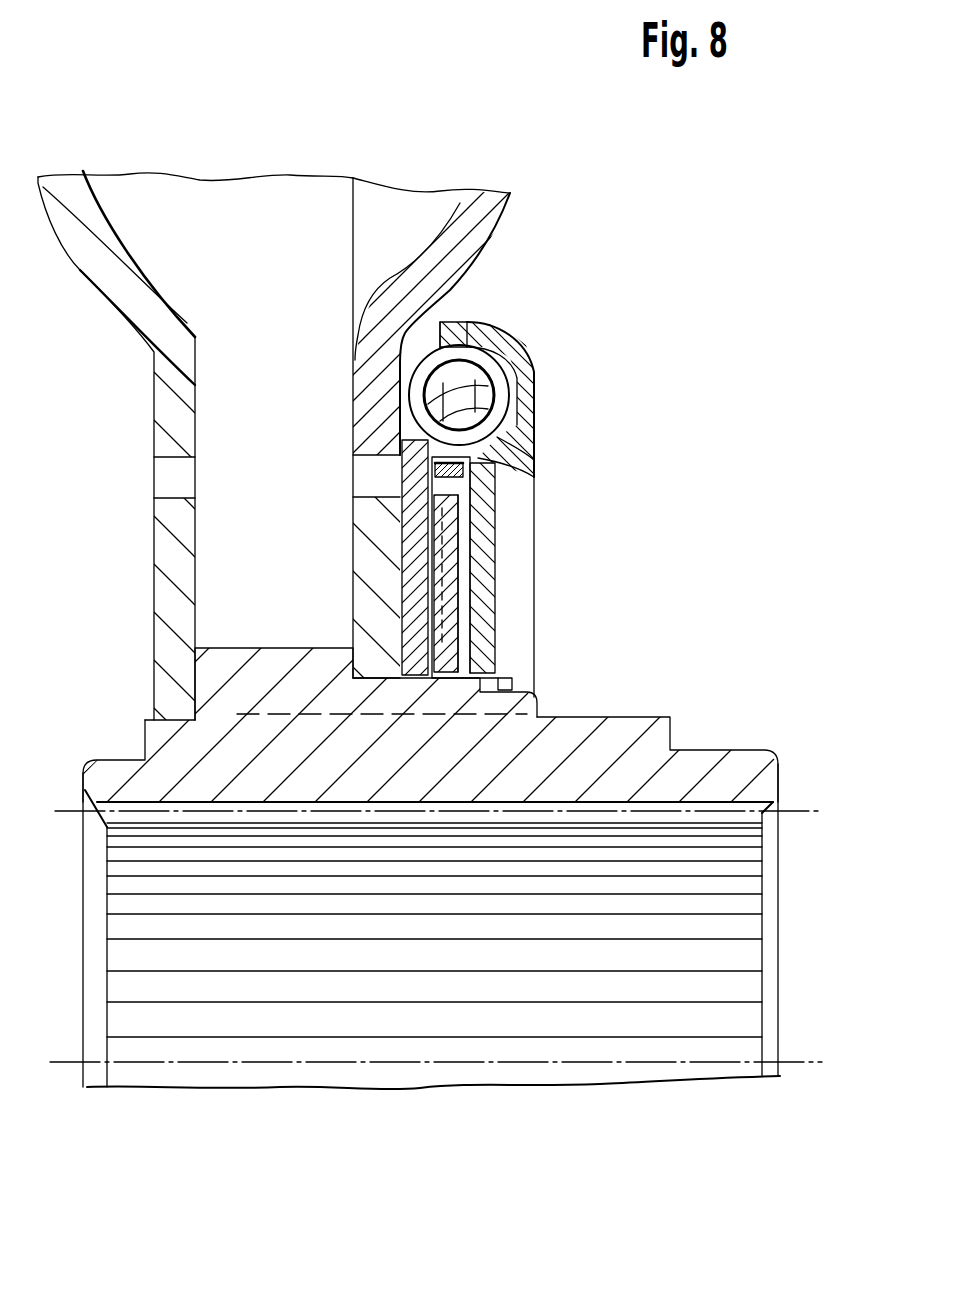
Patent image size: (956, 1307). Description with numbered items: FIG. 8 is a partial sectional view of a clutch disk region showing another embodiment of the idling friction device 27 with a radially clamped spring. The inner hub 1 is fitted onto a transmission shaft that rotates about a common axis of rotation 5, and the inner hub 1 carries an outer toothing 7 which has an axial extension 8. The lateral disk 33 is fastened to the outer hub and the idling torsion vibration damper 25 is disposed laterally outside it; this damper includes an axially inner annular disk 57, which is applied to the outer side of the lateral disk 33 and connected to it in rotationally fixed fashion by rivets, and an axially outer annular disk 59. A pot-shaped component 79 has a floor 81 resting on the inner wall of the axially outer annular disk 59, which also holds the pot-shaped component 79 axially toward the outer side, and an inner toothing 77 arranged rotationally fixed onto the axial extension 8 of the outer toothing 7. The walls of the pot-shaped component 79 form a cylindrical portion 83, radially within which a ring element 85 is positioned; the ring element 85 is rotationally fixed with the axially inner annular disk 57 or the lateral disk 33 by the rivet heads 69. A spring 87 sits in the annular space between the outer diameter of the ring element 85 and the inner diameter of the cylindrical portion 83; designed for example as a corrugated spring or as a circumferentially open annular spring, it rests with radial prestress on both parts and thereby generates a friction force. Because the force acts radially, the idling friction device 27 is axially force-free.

The inner hub 1 is at (175, 765).
The axis of rotation 5 is at (488, 1062).
The outer toothing 7 is at (268, 665).
The axial extension 8 is at (377, 700).
The idling torsion vibration damper 25 is at (512, 338).
The idling friction device 27 is at (502, 542).
The lateral disk 33 is at (473, 250).
The axially inner annular disk 57 is at (412, 540).
The axially outer annular disk 59 is at (487, 627).
The rivet head 69 is at (440, 592).
The inner toothing 77 is at (480, 675).
The pot-shaped component 79 is at (464, 473).
The floor 81 is at (470, 514).
The cylindrical portion 83 is at (405, 452).
The ring element 85 is at (456, 572).
The spring 87 is at (500, 455).